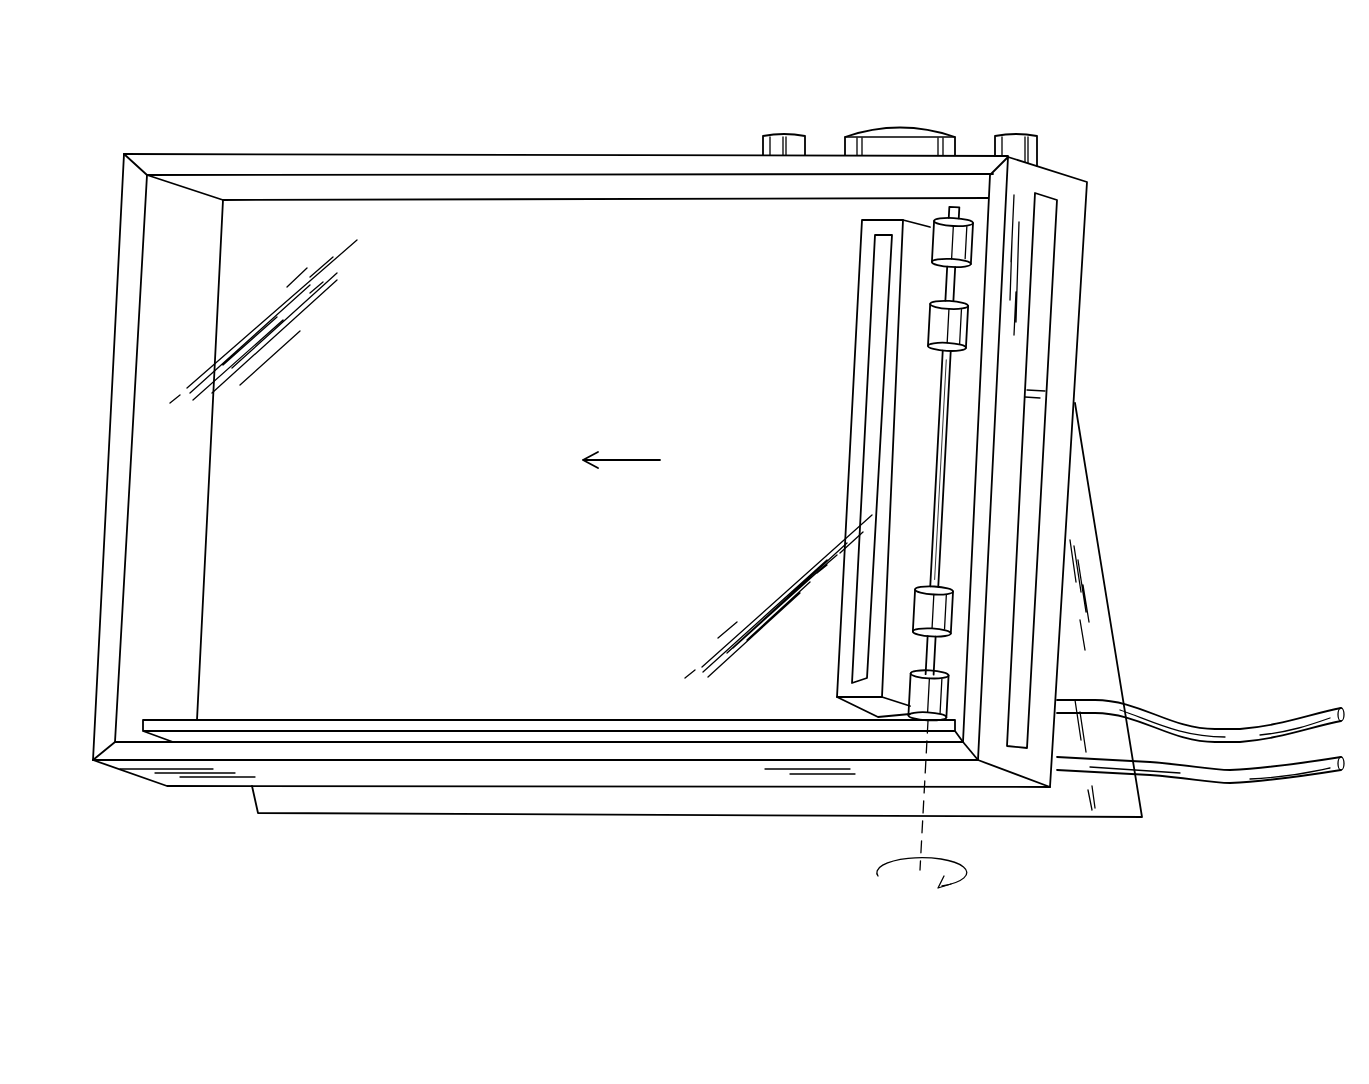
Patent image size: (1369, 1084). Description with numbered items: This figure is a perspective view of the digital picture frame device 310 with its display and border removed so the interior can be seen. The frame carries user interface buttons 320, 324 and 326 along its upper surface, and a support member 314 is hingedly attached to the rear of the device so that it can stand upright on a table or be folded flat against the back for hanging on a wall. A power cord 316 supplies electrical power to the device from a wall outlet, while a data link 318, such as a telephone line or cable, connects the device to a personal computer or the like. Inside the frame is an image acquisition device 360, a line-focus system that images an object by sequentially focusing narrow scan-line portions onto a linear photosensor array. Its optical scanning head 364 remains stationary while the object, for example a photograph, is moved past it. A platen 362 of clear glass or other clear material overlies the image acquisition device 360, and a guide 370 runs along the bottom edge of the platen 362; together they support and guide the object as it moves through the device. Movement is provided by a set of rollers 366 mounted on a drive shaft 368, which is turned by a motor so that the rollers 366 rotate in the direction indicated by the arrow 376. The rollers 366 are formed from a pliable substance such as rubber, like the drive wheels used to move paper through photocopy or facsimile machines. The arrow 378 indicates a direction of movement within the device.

The digital picture frame device 310 is at (1212, 143).
The support member 314 is at (1098, 610).
The power cord 316 is at (1240, 783).
The data link 318 is at (1236, 722).
The user interface button 320 is at (903, 127).
The user interface button 324 is at (798, 135).
The user interface button 326 is at (1027, 134).
The image acquisition device 360 is at (845, 357).
The platen 362 is at (535, 235).
The optical scanning head 364 is at (877, 288).
The rollers 366 is at (978, 328).
The drive shaft 368 is at (950, 463).
The guide 370 is at (347, 720).
The arrow 376 is at (875, 864).
The direction arrow 378 is at (622, 460).